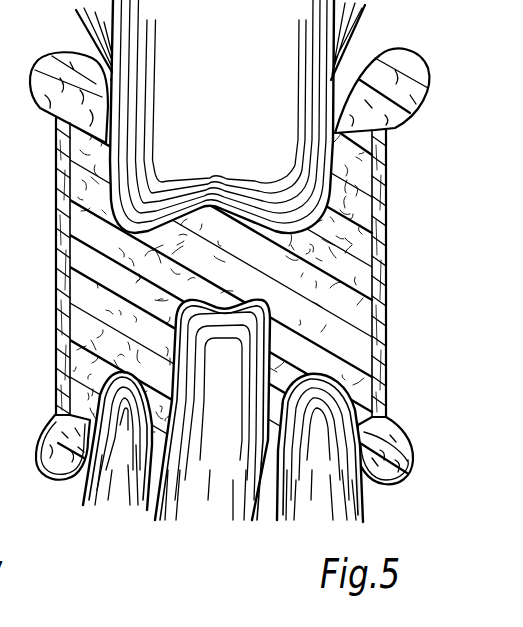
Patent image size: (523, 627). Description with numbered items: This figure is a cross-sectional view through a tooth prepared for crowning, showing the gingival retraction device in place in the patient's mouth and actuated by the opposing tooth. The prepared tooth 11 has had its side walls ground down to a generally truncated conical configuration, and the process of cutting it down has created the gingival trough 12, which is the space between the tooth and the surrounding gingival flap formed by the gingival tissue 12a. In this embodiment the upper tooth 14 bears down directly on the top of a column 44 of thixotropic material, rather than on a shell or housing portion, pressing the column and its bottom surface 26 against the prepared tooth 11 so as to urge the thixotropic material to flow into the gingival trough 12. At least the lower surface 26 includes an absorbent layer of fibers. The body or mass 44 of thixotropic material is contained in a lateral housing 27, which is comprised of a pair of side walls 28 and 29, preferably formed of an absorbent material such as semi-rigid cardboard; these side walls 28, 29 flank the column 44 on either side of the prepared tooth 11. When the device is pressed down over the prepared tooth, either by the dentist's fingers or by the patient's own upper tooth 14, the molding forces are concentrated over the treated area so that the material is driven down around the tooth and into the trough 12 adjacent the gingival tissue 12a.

The tooth 11 is at (223, 438).
The gingival trough 12 is at (277, 424).
The gingival tissue 12a is at (332, 513).
The upper tooth 14 is at (224, 141).
The bottom surface 26 is at (91, 434).
The housing 27 is at (57, 250).
The side wall 28 is at (382, 311).
The side wall 29 is at (54, 307).
The column of thixotropic material 44 is at (360, 250).